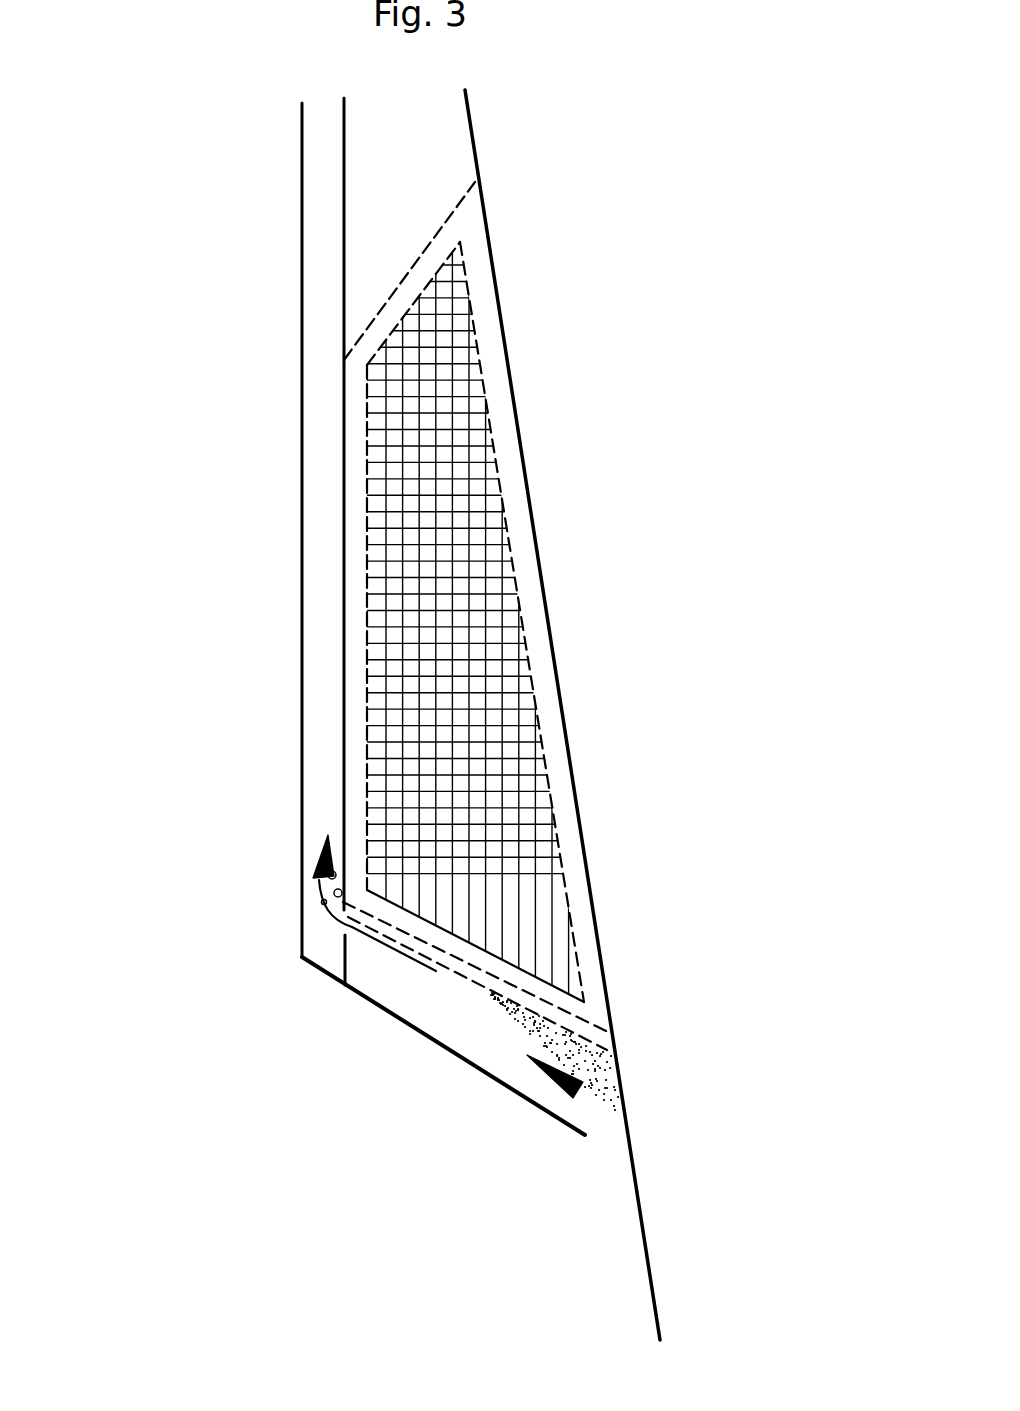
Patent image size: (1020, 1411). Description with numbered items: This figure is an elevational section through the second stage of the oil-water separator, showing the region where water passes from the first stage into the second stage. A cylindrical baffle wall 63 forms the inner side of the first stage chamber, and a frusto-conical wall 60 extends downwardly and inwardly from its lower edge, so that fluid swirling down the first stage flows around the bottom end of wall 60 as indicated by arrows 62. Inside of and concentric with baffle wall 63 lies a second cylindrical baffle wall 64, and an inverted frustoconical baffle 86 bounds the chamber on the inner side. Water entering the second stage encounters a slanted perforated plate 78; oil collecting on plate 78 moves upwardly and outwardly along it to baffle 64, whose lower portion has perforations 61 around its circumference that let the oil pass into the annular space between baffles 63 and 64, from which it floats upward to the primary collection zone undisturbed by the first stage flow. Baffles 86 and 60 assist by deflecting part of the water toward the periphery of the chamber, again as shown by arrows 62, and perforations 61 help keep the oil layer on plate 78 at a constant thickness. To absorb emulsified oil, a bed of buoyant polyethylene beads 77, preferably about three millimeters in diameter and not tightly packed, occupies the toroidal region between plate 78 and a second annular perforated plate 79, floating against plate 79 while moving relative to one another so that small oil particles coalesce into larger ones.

The frusto-conical wall 60 is at (387, 1013).
The perforations 61 is at (344, 922).
The arrows 62 is at (580, 1088).
The baffle wall 63 is at (302, 378).
The baffle wall 64 is at (343, 118).
The polyethylene beads 77 is at (417, 627).
The perforated plate 78 is at (512, 966).
The annular perforated plate 79 is at (455, 207).
The inverted frustoconical baffle 86 is at (520, 443).